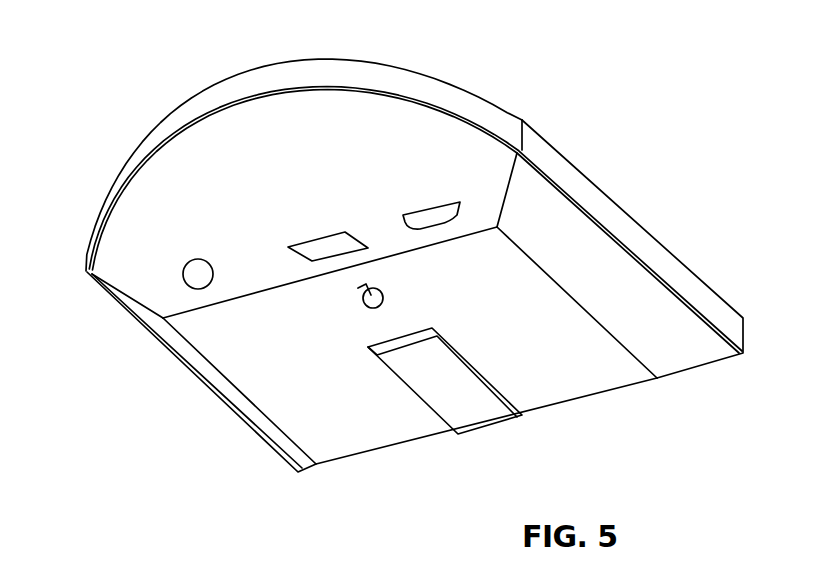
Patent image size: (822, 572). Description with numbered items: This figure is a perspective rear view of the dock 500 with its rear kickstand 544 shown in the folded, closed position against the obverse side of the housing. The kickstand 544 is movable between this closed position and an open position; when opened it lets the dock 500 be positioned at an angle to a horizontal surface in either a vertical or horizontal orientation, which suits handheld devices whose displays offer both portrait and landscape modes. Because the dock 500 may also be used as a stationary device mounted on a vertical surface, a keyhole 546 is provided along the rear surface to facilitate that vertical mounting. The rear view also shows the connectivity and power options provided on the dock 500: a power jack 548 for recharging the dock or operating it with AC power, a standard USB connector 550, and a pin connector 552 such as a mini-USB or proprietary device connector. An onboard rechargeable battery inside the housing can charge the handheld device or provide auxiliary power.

The dock 500 is at (438, 76).
The kickstand 544 is at (483, 418).
The keyhole 546 is at (363, 301).
The power jack 548 is at (184, 267).
The standard USB connector 550 is at (333, 236).
The pin connector 552 is at (440, 203).